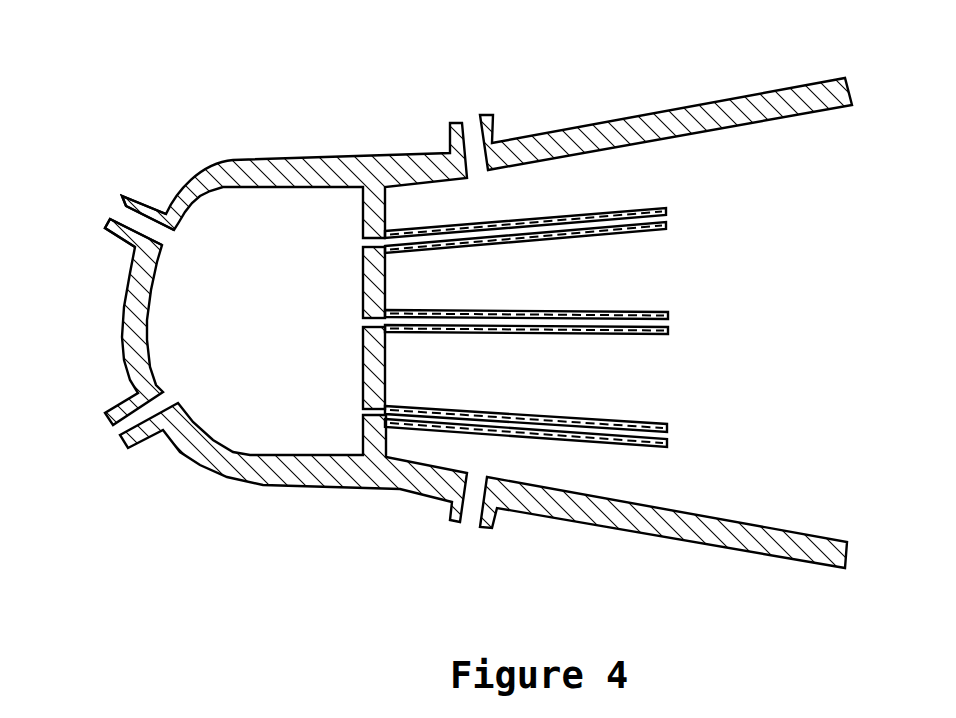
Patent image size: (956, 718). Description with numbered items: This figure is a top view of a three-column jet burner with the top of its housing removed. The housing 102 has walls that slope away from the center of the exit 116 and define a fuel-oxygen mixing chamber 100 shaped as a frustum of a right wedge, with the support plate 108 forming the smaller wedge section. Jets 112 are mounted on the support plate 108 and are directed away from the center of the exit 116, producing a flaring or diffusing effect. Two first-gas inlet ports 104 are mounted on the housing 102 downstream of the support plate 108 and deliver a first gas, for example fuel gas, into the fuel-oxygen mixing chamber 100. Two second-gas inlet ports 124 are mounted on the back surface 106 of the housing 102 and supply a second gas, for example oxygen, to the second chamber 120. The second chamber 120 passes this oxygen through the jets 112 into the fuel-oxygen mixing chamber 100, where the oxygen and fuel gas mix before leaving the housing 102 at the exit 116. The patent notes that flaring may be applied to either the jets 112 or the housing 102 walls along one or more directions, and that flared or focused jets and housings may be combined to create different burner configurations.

The fuel-oxygen mixing chamber 100 is at (684, 272).
The housing 102 is at (759, 572).
The first-gas inlet port 104 is at (447, 518).
The back surface 106 is at (123, 316).
The support plate 108 is at (362, 218).
The jet 112 is at (565, 441).
The exit 116 is at (859, 335).
The second chamber 120 is at (270, 318).
The second-gas inlet port 124 is at (134, 199).